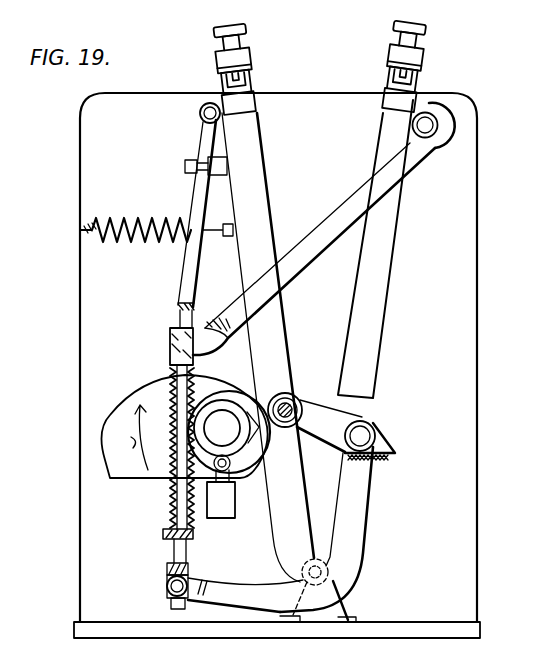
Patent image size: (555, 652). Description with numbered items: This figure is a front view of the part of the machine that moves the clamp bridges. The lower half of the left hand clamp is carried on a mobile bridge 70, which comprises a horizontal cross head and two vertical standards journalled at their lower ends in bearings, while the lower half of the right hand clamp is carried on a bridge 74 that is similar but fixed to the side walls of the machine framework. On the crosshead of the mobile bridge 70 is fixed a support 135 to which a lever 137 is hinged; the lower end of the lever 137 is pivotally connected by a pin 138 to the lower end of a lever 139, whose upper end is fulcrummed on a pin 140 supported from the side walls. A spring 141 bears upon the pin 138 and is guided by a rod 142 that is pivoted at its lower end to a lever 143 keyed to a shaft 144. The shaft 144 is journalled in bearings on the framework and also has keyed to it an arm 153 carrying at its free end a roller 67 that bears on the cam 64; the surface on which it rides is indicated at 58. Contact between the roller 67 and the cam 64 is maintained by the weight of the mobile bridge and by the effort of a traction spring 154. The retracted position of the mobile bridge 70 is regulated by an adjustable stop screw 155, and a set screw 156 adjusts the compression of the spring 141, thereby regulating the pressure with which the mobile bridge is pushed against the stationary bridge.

The cam 58 is at (218, 418).
The cam 64 is at (123, 417).
The roller 67 is at (295, 400).
The mobile bridge 70 is at (255, 95).
The bridge 74 is at (402, 103).
The support 135 is at (206, 103).
The lever 137 is at (197, 202).
The pin 138 is at (170, 343).
The lever 139 is at (300, 273).
The pin 140 is at (427, 125).
The spring 141 is at (170, 492).
The rod 142 is at (177, 365).
The lever 143 is at (231, 584).
The shaft 144 is at (374, 428).
The arm 153 is at (312, 425).
The traction spring 154 is at (148, 242).
The adjustable stop screw 155 is at (197, 157).
The set screw 156 is at (192, 537).